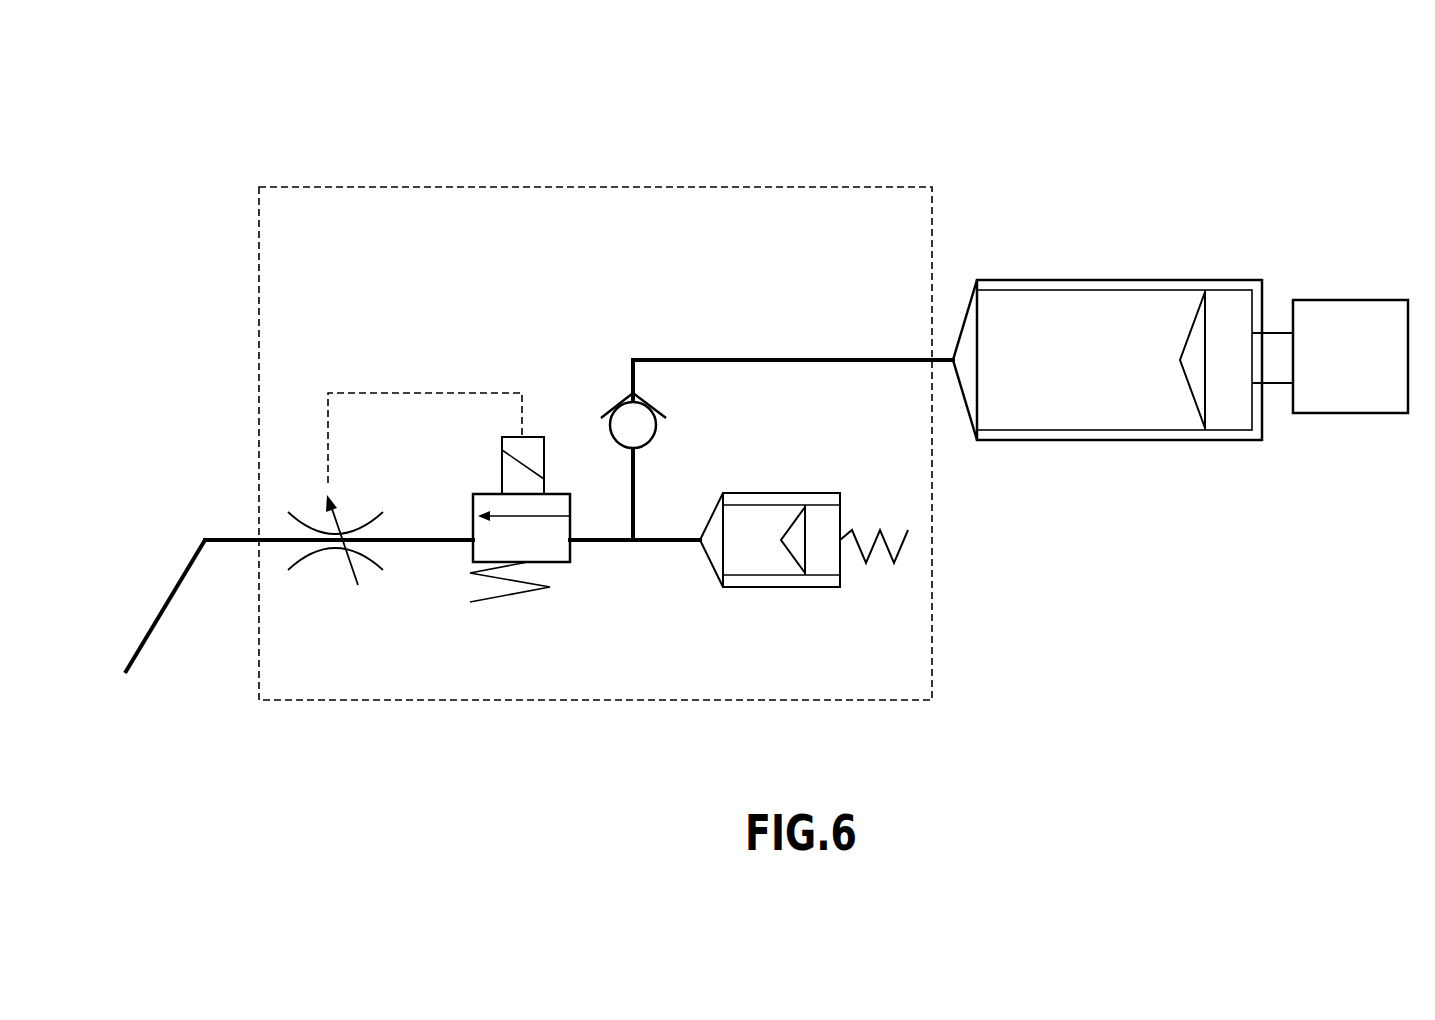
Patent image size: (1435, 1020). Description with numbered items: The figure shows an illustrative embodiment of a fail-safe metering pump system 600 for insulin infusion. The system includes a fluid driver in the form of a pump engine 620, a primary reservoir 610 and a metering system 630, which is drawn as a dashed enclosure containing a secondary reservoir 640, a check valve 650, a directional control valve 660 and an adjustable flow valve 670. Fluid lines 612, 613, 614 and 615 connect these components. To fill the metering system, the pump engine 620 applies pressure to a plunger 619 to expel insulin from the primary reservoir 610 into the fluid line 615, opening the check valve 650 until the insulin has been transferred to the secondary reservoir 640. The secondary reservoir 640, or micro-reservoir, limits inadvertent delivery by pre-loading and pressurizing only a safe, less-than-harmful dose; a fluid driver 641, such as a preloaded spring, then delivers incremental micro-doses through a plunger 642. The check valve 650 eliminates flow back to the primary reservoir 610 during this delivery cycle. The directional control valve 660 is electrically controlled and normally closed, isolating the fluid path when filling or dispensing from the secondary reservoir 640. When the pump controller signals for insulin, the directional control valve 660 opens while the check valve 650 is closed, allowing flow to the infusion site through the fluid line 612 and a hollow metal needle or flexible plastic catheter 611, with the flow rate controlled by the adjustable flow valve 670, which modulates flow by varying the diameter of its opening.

The fail-safe metering pump system 600 is at (221, 148).
The primary reservoir 610 is at (1123, 351).
The hollow metal needle or flexible plastic catheter 611 is at (157, 625).
The fluid line 612 is at (233, 538).
The fluid line 613 is at (658, 547).
The fluid line 614 is at (637, 497).
The fluid line 615 is at (758, 357).
The plunger 619 is at (1190, 323).
The pump engine 620 is at (1387, 300).
The metering system 630 is at (877, 187).
The secondary reservoir 640 is at (805, 557).
The fluid driver 641 is at (885, 557).
The plunger 642 is at (793, 560).
The check valve 650 is at (652, 402).
The directional control valve 660 is at (572, 552).
The adjustable flow valve 670 is at (367, 567).